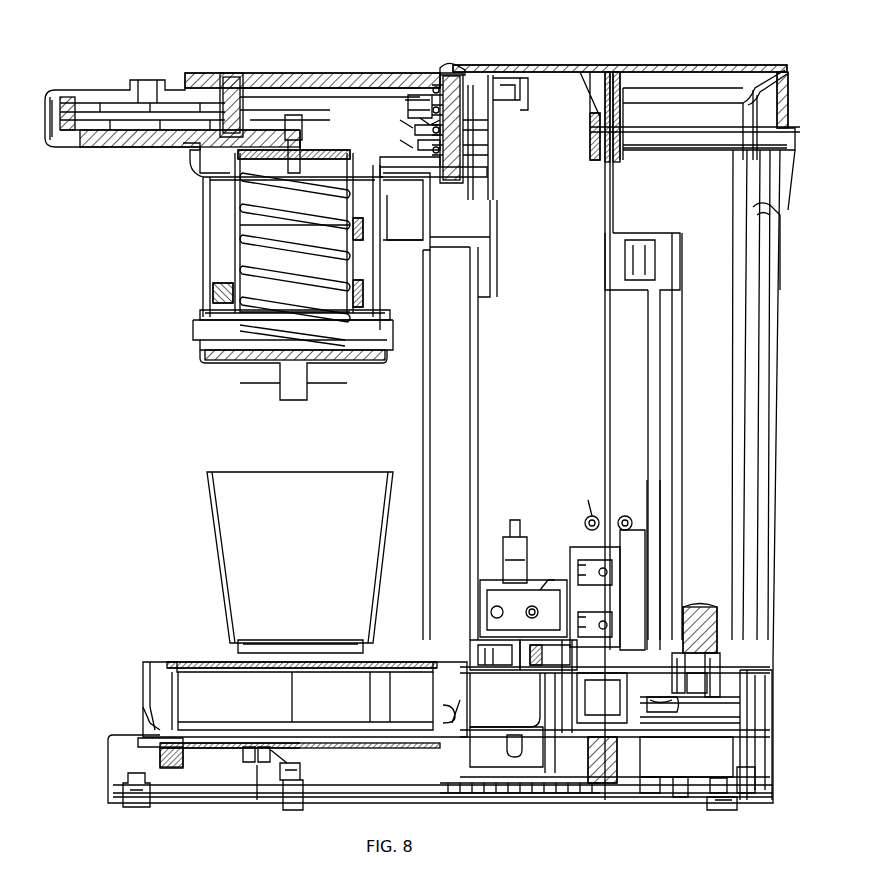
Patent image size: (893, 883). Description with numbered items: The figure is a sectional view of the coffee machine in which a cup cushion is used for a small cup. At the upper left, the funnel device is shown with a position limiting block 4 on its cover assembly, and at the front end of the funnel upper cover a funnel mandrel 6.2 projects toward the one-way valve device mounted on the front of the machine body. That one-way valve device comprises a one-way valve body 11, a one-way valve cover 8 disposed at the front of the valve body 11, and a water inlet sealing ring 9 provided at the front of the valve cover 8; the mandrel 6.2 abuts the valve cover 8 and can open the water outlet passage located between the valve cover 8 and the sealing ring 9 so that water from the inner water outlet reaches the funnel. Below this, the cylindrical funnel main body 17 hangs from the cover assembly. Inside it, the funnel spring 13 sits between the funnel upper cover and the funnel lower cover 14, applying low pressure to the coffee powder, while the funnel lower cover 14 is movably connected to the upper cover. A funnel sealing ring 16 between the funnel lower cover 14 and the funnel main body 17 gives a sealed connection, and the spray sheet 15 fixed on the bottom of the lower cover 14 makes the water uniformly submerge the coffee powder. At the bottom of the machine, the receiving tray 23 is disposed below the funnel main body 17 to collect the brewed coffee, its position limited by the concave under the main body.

The position limiting block 4 is at (147, 80).
The one-way valve body 11 is at (232, 80).
The funnel mandrel 6.2 is at (428, 98).
The water inlet sealing ring 9 is at (437, 83).
The one-way valve cover 8 is at (460, 73).
The funnel spring 13 is at (237, 208).
The funnel main body 17 is at (207, 263).
The funnel lower cover 14 is at (217, 283).
The funnel sealing ring 16 is at (213, 310).
The spray sheet 15 is at (213, 322).
The receiving tray 23 is at (150, 660).